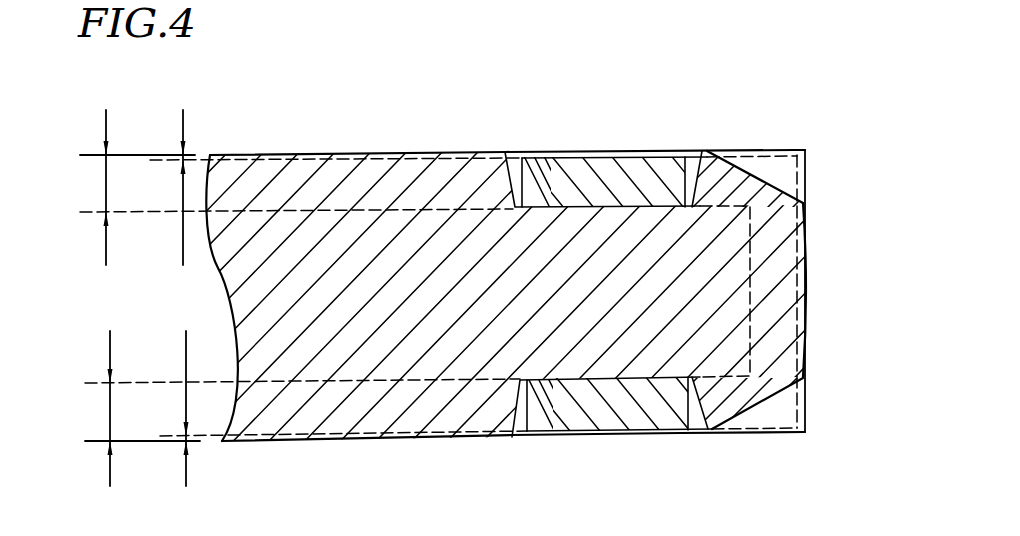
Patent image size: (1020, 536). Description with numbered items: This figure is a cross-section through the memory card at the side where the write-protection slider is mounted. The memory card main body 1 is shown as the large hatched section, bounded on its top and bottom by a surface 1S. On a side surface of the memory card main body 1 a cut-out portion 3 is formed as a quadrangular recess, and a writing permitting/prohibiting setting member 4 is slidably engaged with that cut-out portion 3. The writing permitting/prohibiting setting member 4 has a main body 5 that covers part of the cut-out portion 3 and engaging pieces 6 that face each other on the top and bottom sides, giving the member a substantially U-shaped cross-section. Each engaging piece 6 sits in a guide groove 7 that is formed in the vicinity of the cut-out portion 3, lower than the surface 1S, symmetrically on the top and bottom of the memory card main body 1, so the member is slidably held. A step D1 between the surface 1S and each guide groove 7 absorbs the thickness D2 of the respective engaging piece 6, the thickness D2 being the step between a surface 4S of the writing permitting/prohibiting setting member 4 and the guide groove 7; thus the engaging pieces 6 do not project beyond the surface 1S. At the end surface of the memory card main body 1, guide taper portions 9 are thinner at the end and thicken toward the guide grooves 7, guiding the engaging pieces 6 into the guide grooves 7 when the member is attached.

The memory card main body 1 is at (433, 187).
The surface of the memory card main body 1S is at (316, 153).
The cut-out portion 3 is at (838, 250).
The writing permitting/prohibiting setting member 4 is at (760, 83).
The surface of the writing permitting/prohibiting setting member 4S is at (668, 152).
The main body 5 is at (770, 237).
The engaging piece 6 is at (627, 187).
The guide groove 7 is at (557, 208).
The guide taper portion 9 is at (783, 185).
The step D1 is at (106, 183).
The thickness D2 is at (182, 183).